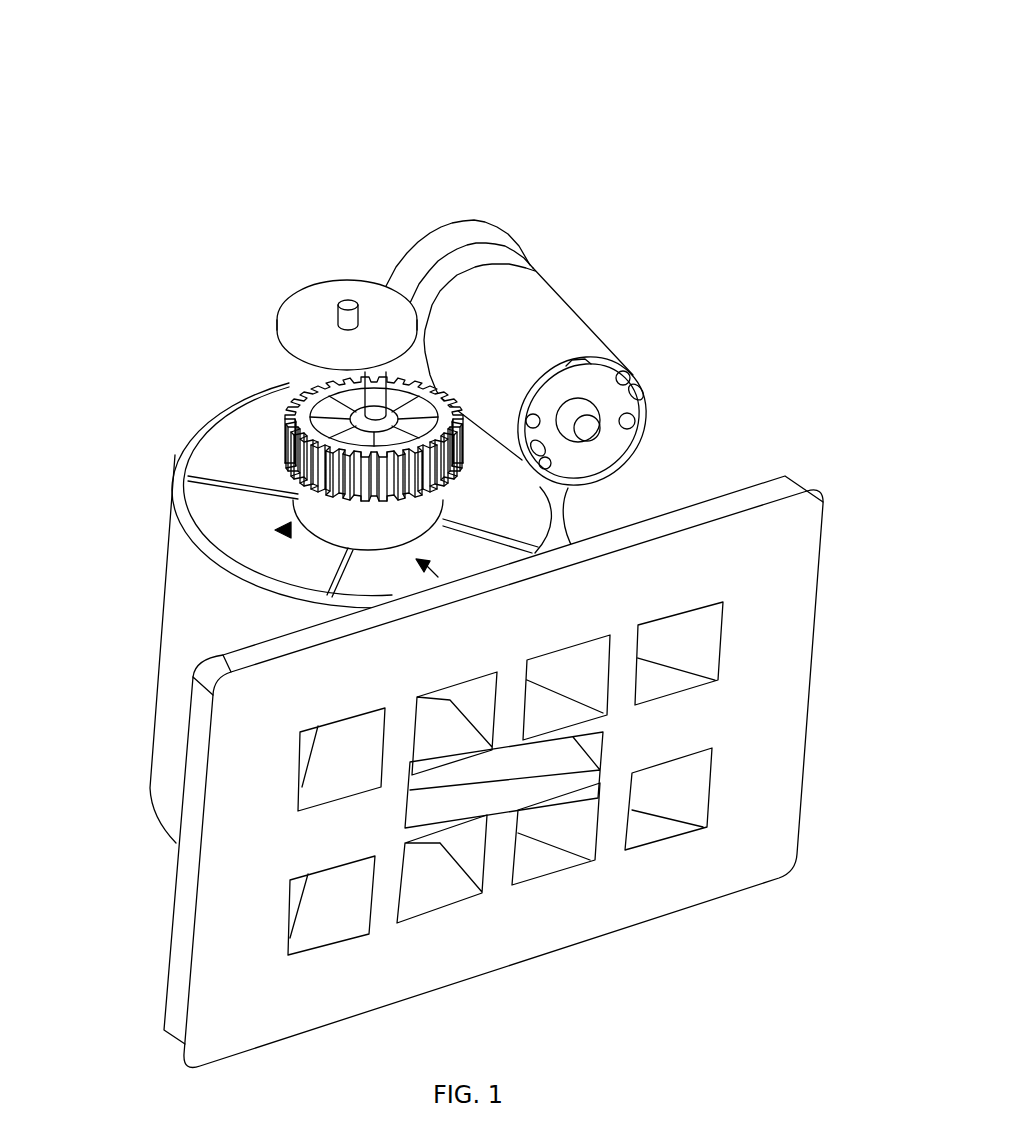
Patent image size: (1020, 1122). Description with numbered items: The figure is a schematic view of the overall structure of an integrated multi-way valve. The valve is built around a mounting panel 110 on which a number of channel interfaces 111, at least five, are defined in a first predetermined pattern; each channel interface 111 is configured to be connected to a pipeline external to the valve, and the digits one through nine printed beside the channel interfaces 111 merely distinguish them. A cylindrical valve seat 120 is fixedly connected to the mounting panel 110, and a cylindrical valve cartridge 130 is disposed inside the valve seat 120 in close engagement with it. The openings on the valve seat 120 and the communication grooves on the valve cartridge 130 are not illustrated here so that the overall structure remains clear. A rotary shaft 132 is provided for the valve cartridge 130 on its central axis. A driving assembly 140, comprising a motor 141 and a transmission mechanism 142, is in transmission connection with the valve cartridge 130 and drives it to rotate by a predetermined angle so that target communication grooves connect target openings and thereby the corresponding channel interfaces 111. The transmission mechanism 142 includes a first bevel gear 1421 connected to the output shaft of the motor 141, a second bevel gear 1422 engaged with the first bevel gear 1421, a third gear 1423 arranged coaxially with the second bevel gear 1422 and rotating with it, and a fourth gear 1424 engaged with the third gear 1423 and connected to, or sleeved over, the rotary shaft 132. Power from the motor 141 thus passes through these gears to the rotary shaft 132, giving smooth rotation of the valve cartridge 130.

The mounting panel 110 is at (763, 729).
The channel interfaces 111 is at (553, 837).
The valve seat 120 is at (190, 637).
The valve cartridge 130 is at (240, 520).
The rotary shaft 132 is at (350, 377).
The driving assembly 140 is at (423, 55).
The motor 141 is at (529, 317).
The transmission mechanism 142 is at (320, 113).
The first bevel gear 1421 is at (451, 238).
The second bevel gear 1422 is at (361, 305).
The third gear 1423 is at (306, 368).
The fourth gear 1424 is at (404, 412).